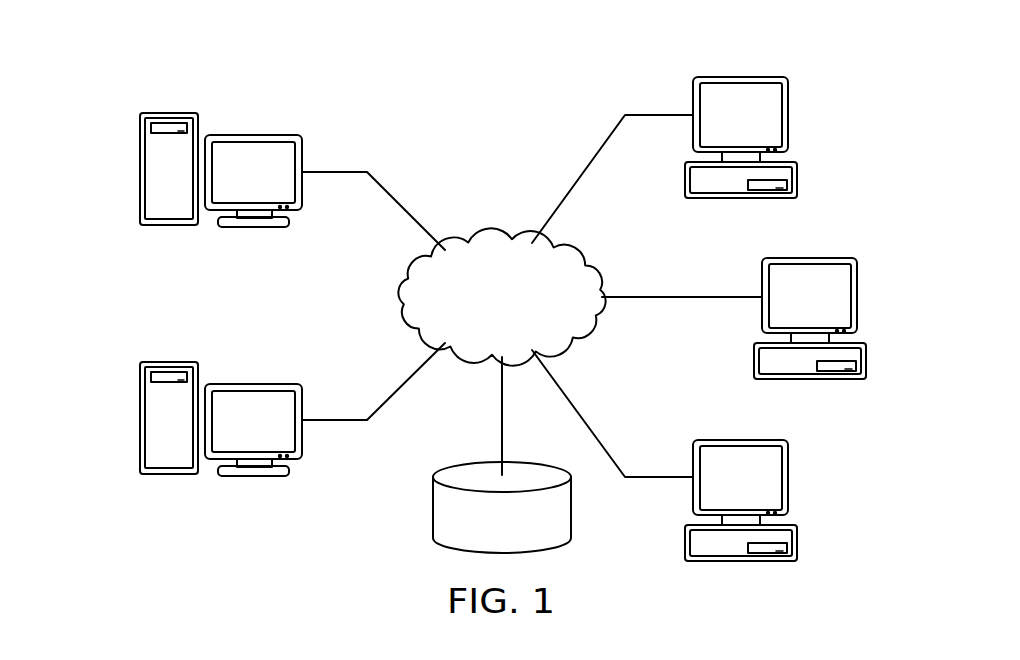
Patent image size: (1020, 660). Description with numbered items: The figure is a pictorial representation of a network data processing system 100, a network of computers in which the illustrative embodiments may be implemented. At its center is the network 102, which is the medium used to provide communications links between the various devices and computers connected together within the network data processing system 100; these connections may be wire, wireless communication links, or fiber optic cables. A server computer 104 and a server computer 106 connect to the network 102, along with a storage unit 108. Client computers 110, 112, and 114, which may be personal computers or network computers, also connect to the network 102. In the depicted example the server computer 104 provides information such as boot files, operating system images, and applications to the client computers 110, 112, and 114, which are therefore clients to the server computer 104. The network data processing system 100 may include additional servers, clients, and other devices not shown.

The network data processing system 100 is at (369, 80).
The network 102 is at (497, 236).
The server computer 104 is at (140, 167).
The server computer 106 is at (140, 417).
The storage unit 108 is at (433, 510).
The client computer 110 is at (797, 180).
The client computer 112 is at (866, 361).
The client computer 114 is at (797, 543).